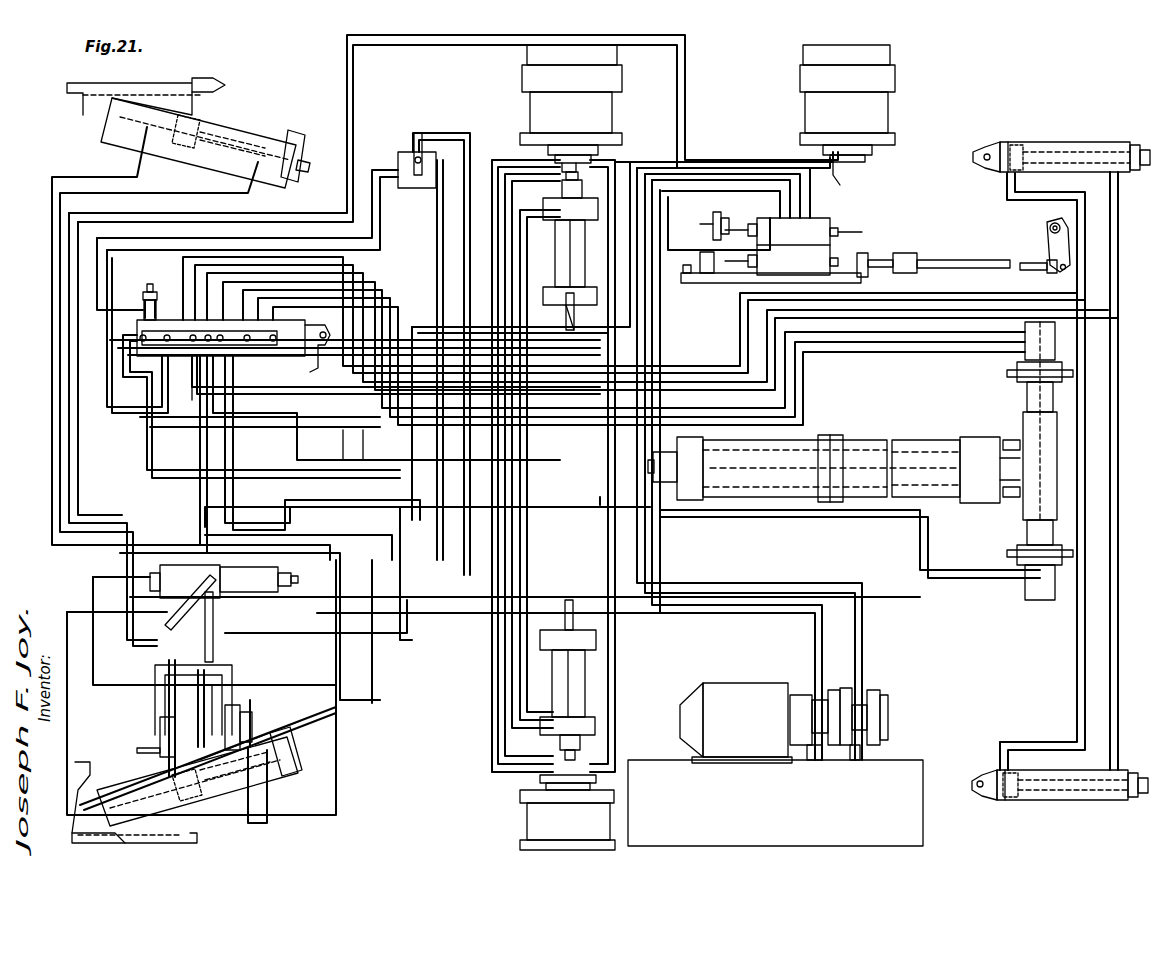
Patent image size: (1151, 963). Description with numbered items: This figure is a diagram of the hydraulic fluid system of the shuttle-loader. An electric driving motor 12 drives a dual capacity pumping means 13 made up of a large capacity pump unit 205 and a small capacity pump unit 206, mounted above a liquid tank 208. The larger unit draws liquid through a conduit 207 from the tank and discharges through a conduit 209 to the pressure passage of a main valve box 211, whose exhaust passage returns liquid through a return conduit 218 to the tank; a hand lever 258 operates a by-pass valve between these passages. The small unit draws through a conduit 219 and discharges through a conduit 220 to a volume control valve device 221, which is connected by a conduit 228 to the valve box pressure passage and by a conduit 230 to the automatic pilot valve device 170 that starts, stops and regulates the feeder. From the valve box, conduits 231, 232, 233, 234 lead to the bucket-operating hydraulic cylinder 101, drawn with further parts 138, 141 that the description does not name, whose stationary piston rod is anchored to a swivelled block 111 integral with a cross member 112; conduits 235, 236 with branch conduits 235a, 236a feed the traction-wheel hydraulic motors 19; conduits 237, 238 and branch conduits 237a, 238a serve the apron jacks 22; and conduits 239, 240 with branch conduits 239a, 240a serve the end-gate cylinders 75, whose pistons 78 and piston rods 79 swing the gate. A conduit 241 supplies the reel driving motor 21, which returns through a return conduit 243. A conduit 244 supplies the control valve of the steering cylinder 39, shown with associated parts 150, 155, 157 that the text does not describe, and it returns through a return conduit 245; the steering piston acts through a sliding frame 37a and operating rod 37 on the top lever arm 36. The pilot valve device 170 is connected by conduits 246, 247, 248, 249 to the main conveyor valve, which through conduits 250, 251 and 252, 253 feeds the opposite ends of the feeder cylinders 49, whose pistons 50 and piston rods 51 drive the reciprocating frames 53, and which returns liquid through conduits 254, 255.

The electric driving motor 12 is at (738, 686).
The pumping means 13 is at (890, 710).
The hydraulic motors 19 is at (530, 82).
The reel driving motor 21 is at (885, 108).
The hydraulic jacks 22 is at (562, 247).
The top lever arm 36 is at (1052, 243).
The operating rod 37 is at (990, 262).
The sliding frame 37a is at (912, 276).
The hydraulic steering cylinder 39 is at (781, 238).
The hydraulic cylinders 49 is at (225, 122).
The pistons 50 is at (180, 150).
The piston rods 51 is at (225, 150).
The reciprocating frames 53 is at (188, 133).
The hydraulic cylinders 75 is at (1061, 139).
The pistons 78 is at (1015, 143).
The piston rods 79 is at (1072, 150).
The hydraulic cylinder 101 is at (834, 477).
The swivelled block 111 is at (1025, 440).
The cross member 112 is at (1030, 510).
The collar 138 is at (878, 440).
The cylinder 141 is at (920, 495).
The valve housing 150 is at (815, 222).
The valve stem 155 is at (737, 245).
The valve stem 157 is at (705, 218).
The automatic pilot valve device 170 is at (160, 728).
The large capacity pump unit 205 is at (805, 695).
The small capacity pump unit 206 is at (855, 695).
The conduit 207 is at (815, 760).
The liquid reservoir or tank 208 is at (915, 766).
The conduit 209 is at (456, 600).
The main valve box 211 is at (173, 346).
The return conduit 218 is at (298, 452).
The conduit 219 is at (860, 758).
The conduit 220 is at (470, 238).
The volume control valve device 221 is at (432, 176).
The conduit 228 is at (312, 212).
The conduit 230 is at (375, 695).
The conduit 231 is at (720, 400).
The conduit 232 is at (805, 405).
The conduit 233 is at (852, 522).
The conduit 234 is at (192, 390).
The conduit 235 is at (218, 297).
The branch conduit 235a is at (615, 275).
The conduit 236 is at (258, 468).
The branch conduit 236a is at (498, 160).
The conduit 237 is at (360, 320).
The branch conduit 237a is at (527, 312).
The conduit 238 is at (362, 395).
The branch conduit 238a is at (530, 452).
The conduit 239 is at (690, 364).
The branch conduit 239a is at (1115, 190).
The conduit 240 is at (758, 382).
The branch conduit 240a is at (1030, 202).
The conduit 241 is at (762, 165).
The return conduit 243 is at (836, 178).
The conduit 244 is at (687, 112).
The return conduit 245 is at (666, 325).
The conduit 246 is at (165, 708).
The conduit 247 is at (225, 695).
The conduit 248 is at (175, 660).
The conduit 249 is at (195, 648).
The conduit 250 is at (67, 615).
The conduit 251 is at (338, 688).
The conduit 252 is at (52, 467).
The conduit 253 is at (65, 495).
The conduit 254 is at (150, 630).
The conduit 255 is at (402, 640).
The hand lever 258 is at (330, 372).